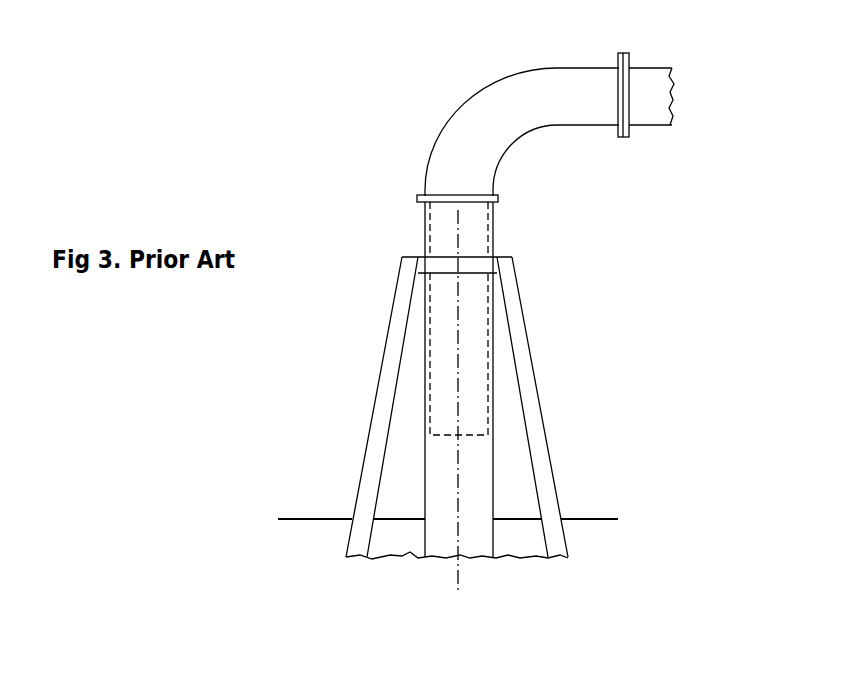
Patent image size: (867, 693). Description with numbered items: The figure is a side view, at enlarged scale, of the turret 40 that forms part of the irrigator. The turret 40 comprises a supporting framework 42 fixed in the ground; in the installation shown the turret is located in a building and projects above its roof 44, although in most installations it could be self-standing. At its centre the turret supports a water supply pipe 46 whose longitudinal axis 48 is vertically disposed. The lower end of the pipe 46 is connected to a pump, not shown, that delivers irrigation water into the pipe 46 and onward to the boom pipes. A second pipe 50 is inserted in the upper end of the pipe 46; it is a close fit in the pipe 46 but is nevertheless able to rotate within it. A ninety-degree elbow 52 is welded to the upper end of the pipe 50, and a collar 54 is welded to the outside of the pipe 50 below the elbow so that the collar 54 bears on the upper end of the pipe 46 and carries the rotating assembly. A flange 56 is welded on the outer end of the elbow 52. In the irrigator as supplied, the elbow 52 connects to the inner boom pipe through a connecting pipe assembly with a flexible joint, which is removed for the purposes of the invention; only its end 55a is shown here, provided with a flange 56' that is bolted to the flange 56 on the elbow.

The turret 40 is at (540, 400).
The supporting framework 42 is at (388, 327).
The roof 44 is at (603, 519).
The water supply pipe 46 is at (425, 413).
The longitudinal axis 48 is at (458, 543).
The second pipe 50 is at (438, 228).
The elbow 52 is at (453, 133).
The collar 54 is at (500, 200).
The end of assembly C 55a is at (655, 107).
The flange 56 is at (641, 111).
The flange 56' is at (651, 88).